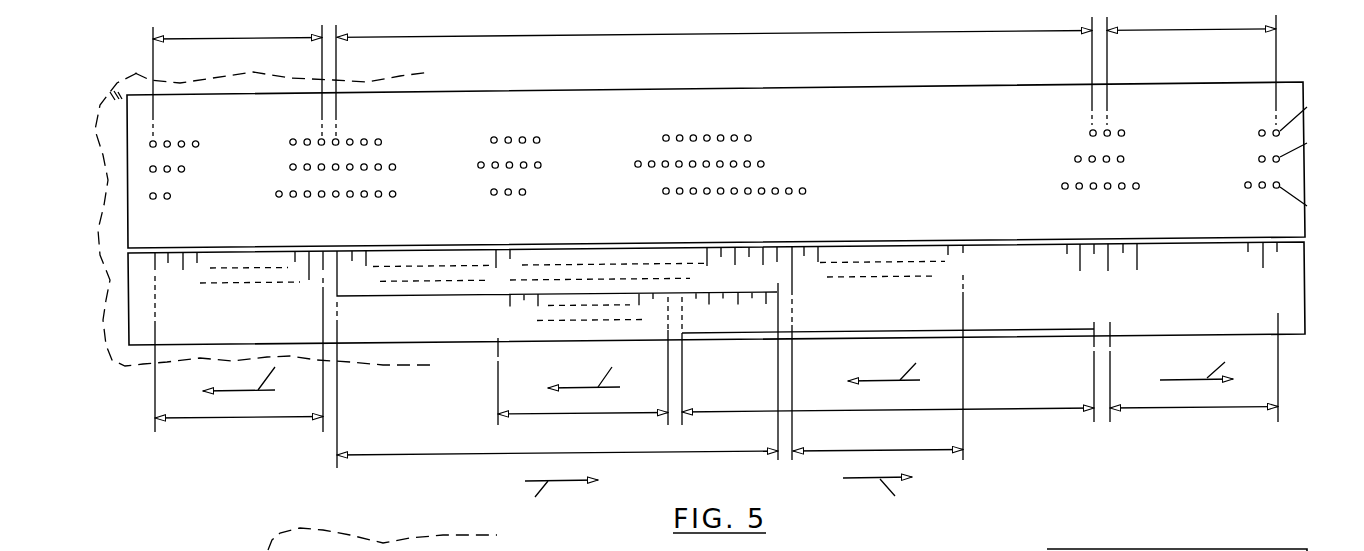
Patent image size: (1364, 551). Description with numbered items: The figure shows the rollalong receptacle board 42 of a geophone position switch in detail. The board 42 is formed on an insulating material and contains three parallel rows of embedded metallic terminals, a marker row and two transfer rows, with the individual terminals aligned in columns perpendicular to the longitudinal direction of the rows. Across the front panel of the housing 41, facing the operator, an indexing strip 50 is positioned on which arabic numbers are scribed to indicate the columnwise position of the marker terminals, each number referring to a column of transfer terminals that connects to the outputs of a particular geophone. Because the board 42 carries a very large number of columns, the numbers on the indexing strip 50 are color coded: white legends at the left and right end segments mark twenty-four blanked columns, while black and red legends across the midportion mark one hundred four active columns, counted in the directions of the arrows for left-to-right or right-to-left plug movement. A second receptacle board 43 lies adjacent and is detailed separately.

The housing 41 is at (108, 92).
The rollalong receptacle board 42 is at (1290, 80).
The indexing strip 50 is at (1305, 297).
The receptacle board 43 is at (1248, 548).